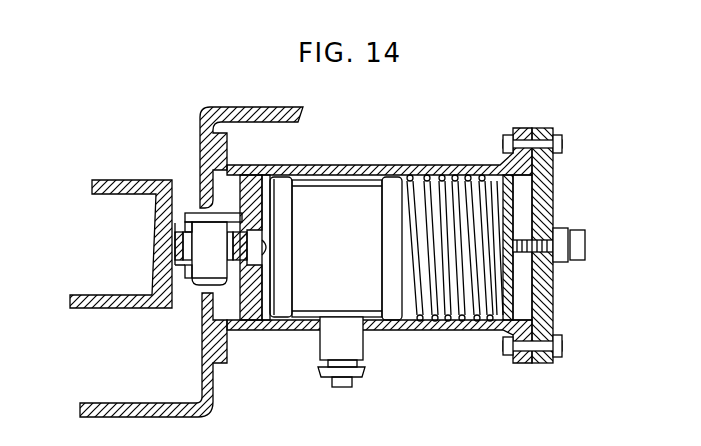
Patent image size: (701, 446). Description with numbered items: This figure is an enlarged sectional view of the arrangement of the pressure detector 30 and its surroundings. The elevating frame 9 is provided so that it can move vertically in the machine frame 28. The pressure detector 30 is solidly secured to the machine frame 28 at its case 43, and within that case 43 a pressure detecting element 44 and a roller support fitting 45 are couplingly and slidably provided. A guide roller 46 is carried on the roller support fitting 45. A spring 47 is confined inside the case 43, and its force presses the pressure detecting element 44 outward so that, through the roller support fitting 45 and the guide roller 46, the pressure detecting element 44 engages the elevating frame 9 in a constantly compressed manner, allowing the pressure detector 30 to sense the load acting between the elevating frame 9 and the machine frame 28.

The elevating frame 9 is at (115, 179).
The machine frame 28 is at (215, 397).
The pressure detector 30 is at (452, 167).
The case 43 is at (393, 328).
The pressure detecting element 44 is at (340, 192).
The roller support fitting 45 is at (242, 213).
The guide roller 46 is at (177, 280).
The spring 47 is at (433, 327).